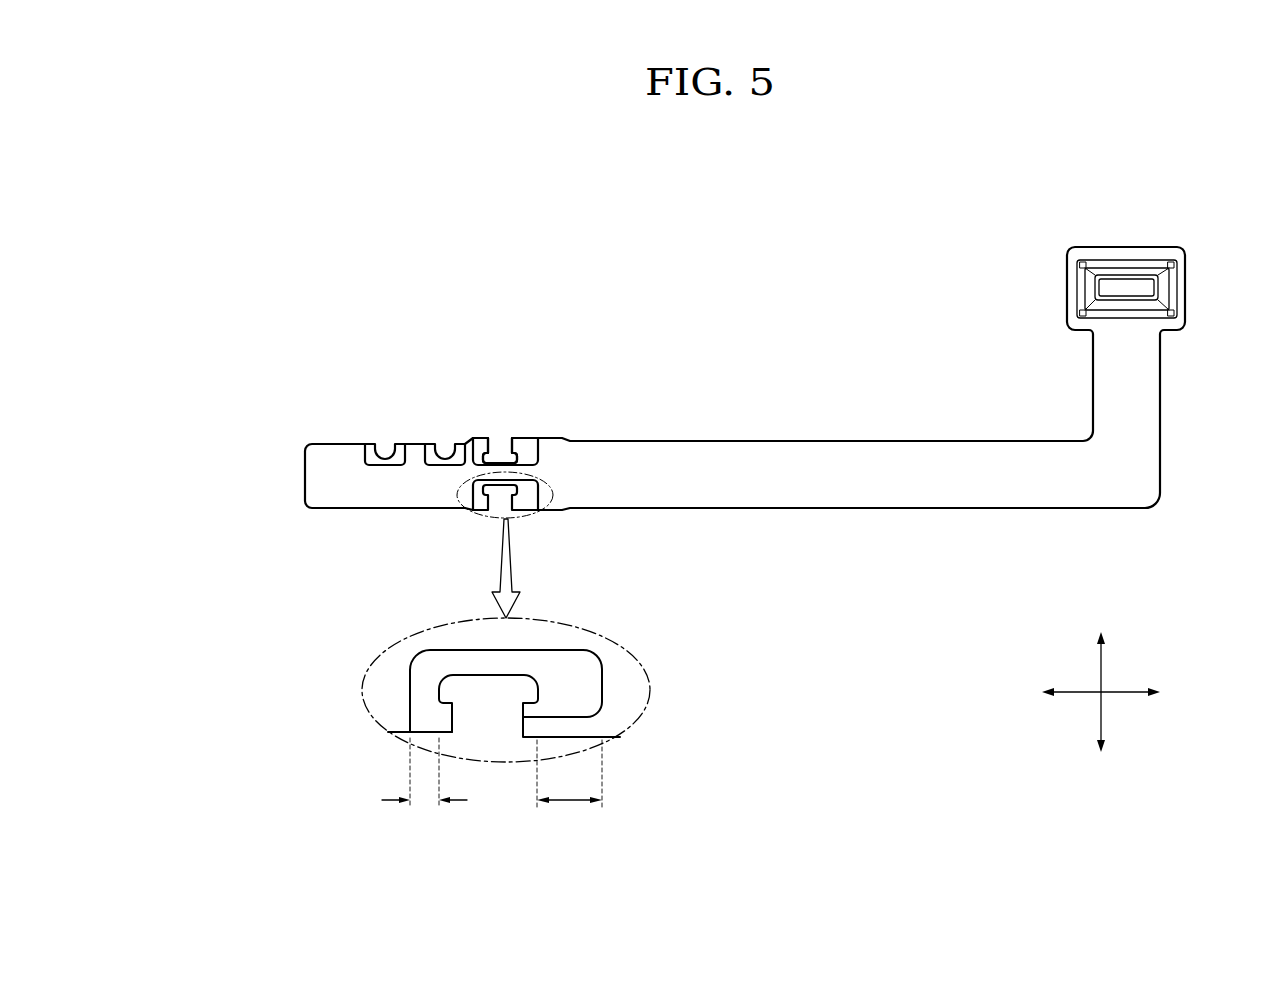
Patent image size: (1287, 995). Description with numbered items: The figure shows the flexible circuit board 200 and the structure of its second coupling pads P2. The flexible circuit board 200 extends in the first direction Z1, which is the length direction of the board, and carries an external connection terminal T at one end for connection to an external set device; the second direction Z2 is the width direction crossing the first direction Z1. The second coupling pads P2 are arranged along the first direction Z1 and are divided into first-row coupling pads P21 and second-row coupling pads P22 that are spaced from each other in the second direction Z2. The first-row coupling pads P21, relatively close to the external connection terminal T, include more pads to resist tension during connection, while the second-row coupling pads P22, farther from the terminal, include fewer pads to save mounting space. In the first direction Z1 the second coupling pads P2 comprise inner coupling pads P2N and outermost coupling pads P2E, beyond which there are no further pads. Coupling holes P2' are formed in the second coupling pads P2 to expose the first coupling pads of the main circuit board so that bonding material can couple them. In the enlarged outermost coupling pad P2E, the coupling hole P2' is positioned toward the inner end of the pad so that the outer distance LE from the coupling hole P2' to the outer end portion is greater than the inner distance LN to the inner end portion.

The flexible circuit board 200 is at (1150, 441).
The external connection terminal T is at (1177, 290).
The second coupling pads P2 is at (345, 435).
The first-row coupling pads P21 is at (328, 411).
The second-row coupling pads P22 is at (282, 497).
The inner coupling pads P2N is at (422, 443).
The outermost coupling pads P2E is at (497, 412).
The coupling holes P2' is at (511, 545).
The inner distance LN is at (424, 787).
The outer distance LE is at (569, 788).
The first direction Z1 is at (1116, 694).
The second direction Z2 is at (1102, 677).